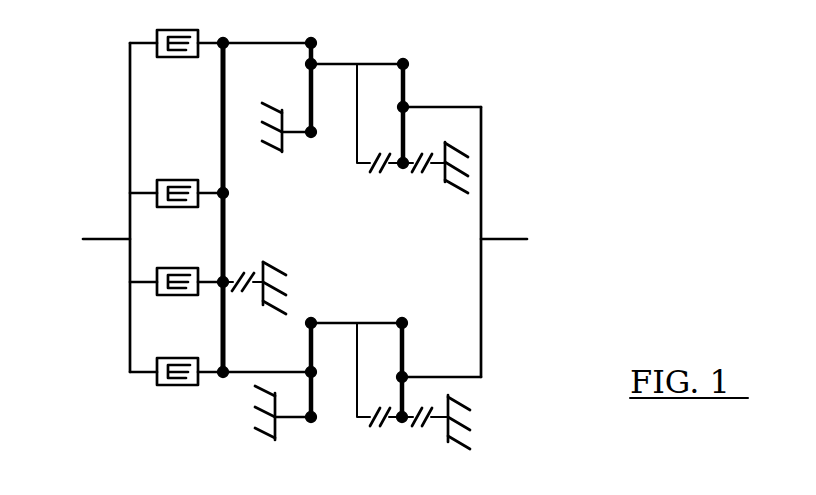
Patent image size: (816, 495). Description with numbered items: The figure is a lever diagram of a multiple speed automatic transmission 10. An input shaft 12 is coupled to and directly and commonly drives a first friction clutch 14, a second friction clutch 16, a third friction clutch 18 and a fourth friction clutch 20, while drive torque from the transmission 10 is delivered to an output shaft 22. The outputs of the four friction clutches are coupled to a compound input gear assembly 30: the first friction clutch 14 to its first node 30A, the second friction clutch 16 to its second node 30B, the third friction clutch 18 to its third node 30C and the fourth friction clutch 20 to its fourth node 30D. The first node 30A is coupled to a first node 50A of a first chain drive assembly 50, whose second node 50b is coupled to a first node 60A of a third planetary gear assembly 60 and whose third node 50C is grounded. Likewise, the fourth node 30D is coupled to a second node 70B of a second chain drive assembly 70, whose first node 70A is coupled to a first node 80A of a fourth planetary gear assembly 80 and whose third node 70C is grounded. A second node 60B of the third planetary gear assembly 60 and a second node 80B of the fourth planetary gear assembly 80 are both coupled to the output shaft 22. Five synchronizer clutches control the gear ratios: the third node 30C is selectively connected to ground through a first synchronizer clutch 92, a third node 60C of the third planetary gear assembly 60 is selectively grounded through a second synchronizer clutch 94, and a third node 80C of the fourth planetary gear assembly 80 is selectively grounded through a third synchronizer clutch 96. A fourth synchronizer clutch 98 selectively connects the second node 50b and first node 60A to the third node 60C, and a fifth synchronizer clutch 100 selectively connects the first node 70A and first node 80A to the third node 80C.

The multiple speed automatic transmission 10 is at (534, 156).
The input shaft 12 is at (100, 242).
The first friction clutch 14 is at (172, 62).
The second friction clutch 16 is at (177, 178).
The third friction clutch 18 is at (172, 300).
The fourth friction clutch 20 is at (180, 387).
The output shaft 22 is at (504, 242).
The compound input gear assembly 30 is at (230, 23).
The first node of the compound input gear assembly 30A is at (221, 52).
The second node of the compound input gear assembly 30B is at (221, 202).
The third node of the compound input gear assembly 30C is at (225, 292).
The fourth node of the compound input gear assembly 30D is at (222, 380).
The first chain drive assembly 50 is at (316, 21).
The first node of the first chain drive assembly 50A is at (305, 50).
The second node of the first chain drive assembly 50b is at (316, 61).
The third node of the first chain drive assembly 50C is at (311, 140).
The third planetary gear assembly 60 is at (412, 30).
The first node of the third planetary gear assembly 60A is at (408, 63).
The second node of the third planetary gear assembly 60B is at (408, 105).
The third node of the third planetary gear assembly 60C is at (400, 170).
The second chain drive assembly 70 is at (322, 289).
The first node of the second chain drive assembly 70A is at (314, 318).
The second node of the second chain drive assembly 70B is at (314, 380).
The third node of the second chain drive assembly 70C is at (308, 424).
The fourth planetary gear assembly 80 is at (414, 297).
The first node of the fourth planetary gear assembly 80A is at (407, 325).
The second node of the fourth planetary gear assembly 80B is at (406, 374).
The third node of the fourth planetary gear assembly 80C is at (404, 424).
The first synchronizer clutch 92 is at (248, 275).
The second synchronizer clutch 94 is at (437, 172).
The third synchronizer clutch 96 is at (424, 412).
The fourth synchronizer clutch 98 is at (385, 155).
The fifth synchronizer clutch 100 is at (375, 426).